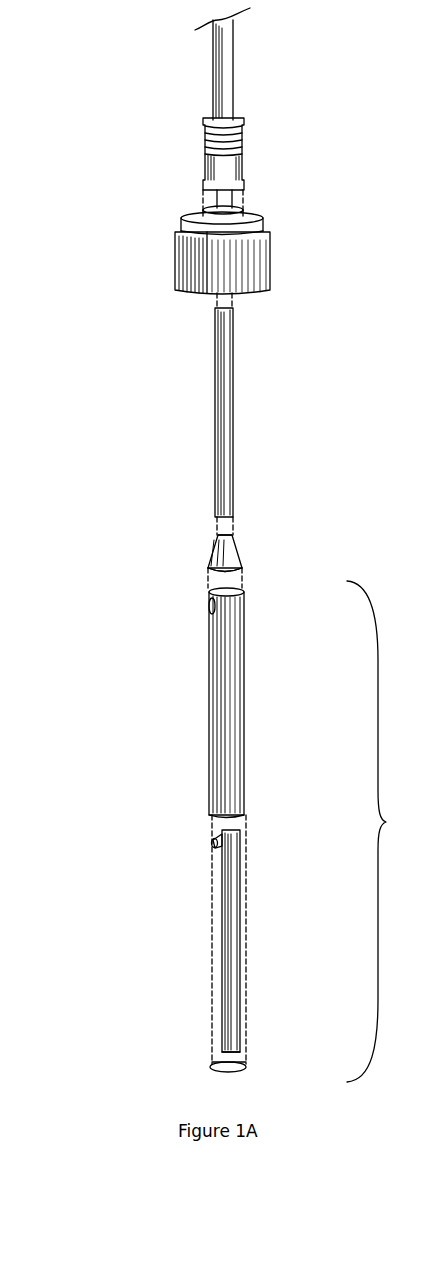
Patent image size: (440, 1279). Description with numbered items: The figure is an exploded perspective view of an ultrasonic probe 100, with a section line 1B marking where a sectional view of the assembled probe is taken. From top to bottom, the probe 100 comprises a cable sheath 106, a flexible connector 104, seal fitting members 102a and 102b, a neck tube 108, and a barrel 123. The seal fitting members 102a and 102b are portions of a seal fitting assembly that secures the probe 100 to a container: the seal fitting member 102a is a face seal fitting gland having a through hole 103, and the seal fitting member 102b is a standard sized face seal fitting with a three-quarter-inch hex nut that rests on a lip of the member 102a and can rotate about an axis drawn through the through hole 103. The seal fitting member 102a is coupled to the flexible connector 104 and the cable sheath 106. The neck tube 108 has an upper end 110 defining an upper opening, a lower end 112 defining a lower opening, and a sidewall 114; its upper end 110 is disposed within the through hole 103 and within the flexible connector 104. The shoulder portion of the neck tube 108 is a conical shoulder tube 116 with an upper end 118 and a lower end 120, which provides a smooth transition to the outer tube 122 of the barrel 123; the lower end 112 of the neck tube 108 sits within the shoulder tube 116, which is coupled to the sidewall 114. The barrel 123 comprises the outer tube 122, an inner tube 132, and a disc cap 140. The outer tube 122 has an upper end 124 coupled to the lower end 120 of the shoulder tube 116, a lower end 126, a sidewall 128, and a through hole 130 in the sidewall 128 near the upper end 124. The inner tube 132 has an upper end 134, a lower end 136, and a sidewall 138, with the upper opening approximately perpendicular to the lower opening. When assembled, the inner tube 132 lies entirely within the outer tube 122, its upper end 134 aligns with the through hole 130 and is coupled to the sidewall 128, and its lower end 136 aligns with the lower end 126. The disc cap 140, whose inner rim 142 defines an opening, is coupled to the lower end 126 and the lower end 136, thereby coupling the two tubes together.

The ultrasonic probe 100 is at (113, 109).
The seal fitting member 102a is at (227, 213).
The seal fitting member 102b is at (265, 262).
The through hole 103 is at (218, 207).
The flexible connector 104 is at (230, 160).
The cable sheath 106 is at (222, 63).
The neck tube 108 is at (225, 390).
The upper end 110 is at (218, 308).
The lower end 112 is at (215, 517).
The sidewall 114 is at (232, 430).
The shoulder tube 116 is at (237, 555).
The upper end 118 is at (218, 535).
The lower end 120 is at (232, 572).
The outer tube 122 is at (233, 673).
The barrel 123 is at (387, 831).
The upper end 124 is at (218, 590).
The lower end 126 is at (215, 822).
The sidewall 128 is at (243, 725).
The through hole 130 is at (212, 607).
The inner tube 132 is at (232, 945).
The upper end 134 is at (215, 838).
The lower end 136 is at (245, 1057).
The sidewall 138 is at (238, 890).
The disc cap 140 is at (247, 1068).
The inner rim 142 is at (222, 1063).
The section line 1B- 1B is at (263, 228).